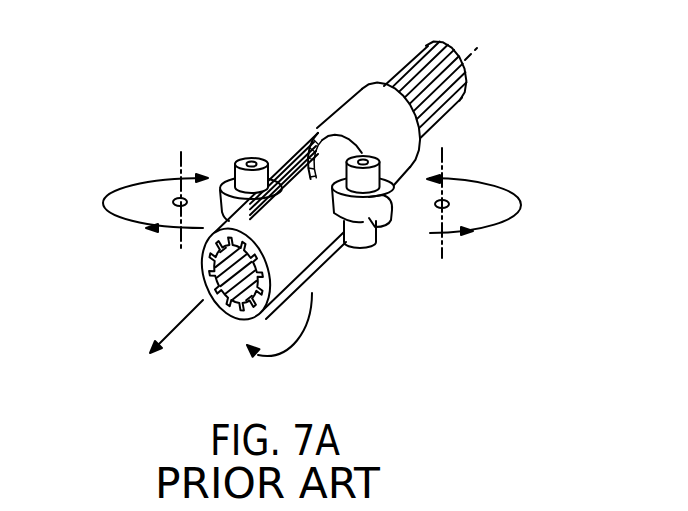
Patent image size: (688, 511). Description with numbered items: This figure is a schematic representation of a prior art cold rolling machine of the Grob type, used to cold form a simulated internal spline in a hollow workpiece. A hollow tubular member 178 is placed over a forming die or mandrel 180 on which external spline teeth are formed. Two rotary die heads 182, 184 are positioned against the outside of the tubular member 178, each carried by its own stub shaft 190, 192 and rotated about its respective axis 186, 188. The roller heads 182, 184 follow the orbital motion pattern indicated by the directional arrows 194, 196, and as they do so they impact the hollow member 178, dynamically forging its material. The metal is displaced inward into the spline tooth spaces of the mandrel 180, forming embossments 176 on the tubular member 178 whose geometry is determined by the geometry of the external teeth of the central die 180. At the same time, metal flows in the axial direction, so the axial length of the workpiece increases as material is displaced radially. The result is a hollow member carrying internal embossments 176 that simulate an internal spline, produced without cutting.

The embossments 176 is at (204, 288).
The hollow tubular member 178 is at (300, 183).
The forming die or mandrel 180 is at (458, 84).
The rotary die head 182 is at (366, 213).
The rotary die head 184 is at (227, 218).
The axis 186 is at (448, 203).
The axis 188 is at (175, 178).
The stub shaft 190 is at (362, 238).
The stub shaft 192 is at (233, 159).
The directional arrow 194 is at (518, 211).
The directional arrow 196 is at (104, 190).